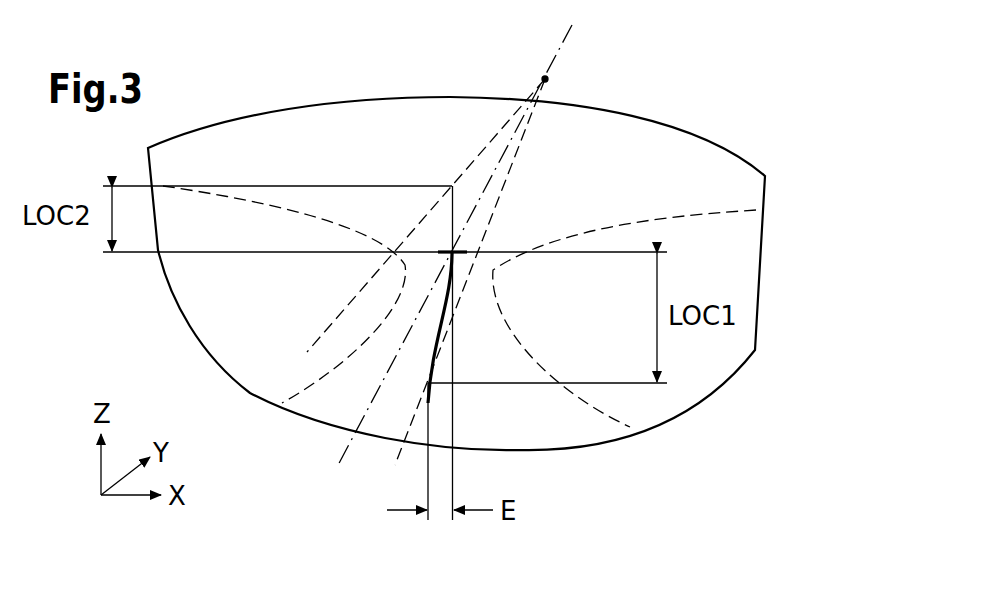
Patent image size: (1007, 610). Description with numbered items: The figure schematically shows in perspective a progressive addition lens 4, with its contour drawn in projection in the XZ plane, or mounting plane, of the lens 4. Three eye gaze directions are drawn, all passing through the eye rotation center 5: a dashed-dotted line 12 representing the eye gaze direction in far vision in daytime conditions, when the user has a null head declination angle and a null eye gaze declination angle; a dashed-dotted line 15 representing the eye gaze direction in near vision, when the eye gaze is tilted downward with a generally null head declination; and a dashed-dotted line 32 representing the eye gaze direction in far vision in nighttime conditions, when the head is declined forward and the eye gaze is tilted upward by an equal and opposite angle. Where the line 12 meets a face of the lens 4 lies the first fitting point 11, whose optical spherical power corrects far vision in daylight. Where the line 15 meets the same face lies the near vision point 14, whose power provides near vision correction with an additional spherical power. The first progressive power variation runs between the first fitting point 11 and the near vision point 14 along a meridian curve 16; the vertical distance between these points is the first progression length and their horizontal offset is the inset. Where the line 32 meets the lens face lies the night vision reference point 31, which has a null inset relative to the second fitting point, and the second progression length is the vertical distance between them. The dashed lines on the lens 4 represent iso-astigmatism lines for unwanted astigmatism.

The progressive addition lens 4 is at (763, 240).
The eye rotation center 5 is at (545, 79).
The first fitting point 11 is at (450, 250).
The dashed-dotted line representing eye gaze direction in far vision 12 is at (512, 143).
The near vision point 14 is at (427, 382).
The dashed-dotted line representing eye gaze direction in near vision 15 is at (507, 185).
The meridian curve 16 is at (436, 338).
The night vision reference point 31 is at (452, 186).
The dashed-dotted line representing eye gaze direction in far vision at night 32 is at (487, 147).